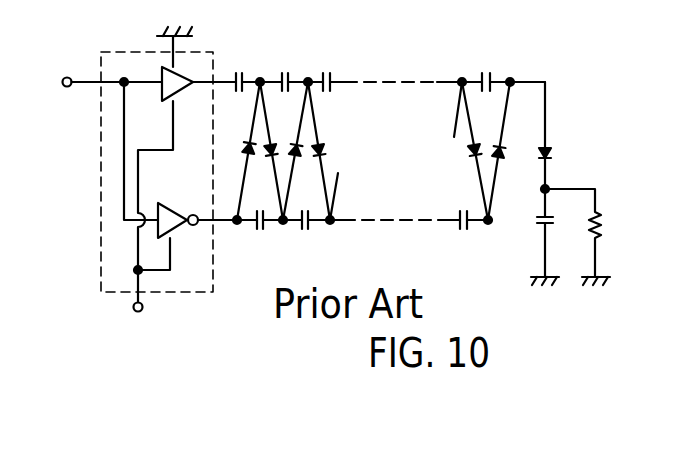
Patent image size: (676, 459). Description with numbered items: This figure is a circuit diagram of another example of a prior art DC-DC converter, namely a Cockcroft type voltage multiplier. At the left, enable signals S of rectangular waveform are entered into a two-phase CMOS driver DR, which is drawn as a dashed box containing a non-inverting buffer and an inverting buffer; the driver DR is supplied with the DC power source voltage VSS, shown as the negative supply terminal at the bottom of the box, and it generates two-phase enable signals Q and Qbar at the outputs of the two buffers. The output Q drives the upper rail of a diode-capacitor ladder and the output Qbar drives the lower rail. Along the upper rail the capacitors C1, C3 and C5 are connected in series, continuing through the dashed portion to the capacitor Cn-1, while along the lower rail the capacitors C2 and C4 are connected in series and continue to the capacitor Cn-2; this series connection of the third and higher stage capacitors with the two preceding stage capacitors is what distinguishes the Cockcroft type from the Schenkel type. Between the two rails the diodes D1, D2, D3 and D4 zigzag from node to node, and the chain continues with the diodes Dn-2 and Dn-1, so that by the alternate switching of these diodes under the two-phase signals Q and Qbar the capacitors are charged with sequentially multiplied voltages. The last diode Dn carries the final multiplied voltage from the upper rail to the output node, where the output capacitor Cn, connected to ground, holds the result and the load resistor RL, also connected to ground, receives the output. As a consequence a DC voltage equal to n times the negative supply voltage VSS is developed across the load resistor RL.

The enable signals S is at (100, 83).
The two-phase CMOS driver DR is at (171, 157).
The two-phase enable signal Q is at (196, 67).
The complementary two-phase enable signal Qbar is at (206, 236).
The DC power source voltage VSS is at (129, 319).
The first stage capacitor C1 is at (242, 72).
The capacitor C2 is at (260, 235).
The third stage capacitor C3 is at (284, 72).
The capacitor C4 is at (313, 235).
The capacitor C5 is at (326, 72).
The capacitor Cn-2 is at (465, 235).
The capacitor Cn-1 is at (486, 73).
The final stage capacitor Cn is at (547, 237).
The diode D1 is at (240, 151).
The diode D2 is at (272, 151).
The diode D3 is at (298, 151).
The diode D4 is at (324, 151).
The diode Dn-2 is at (476, 151).
The diode Dn-1 is at (503, 151).
The diode Dn is at (554, 135).
The load resistor RL is at (584, 237).